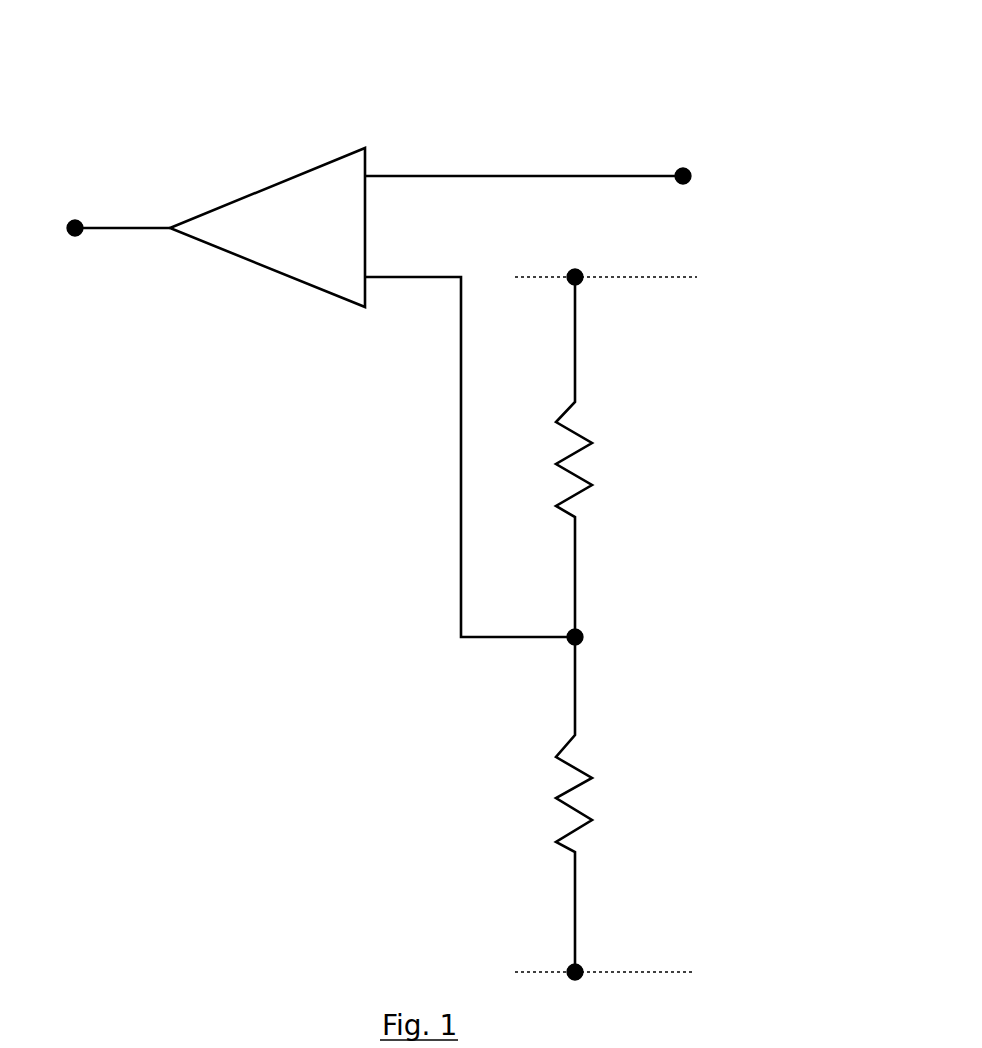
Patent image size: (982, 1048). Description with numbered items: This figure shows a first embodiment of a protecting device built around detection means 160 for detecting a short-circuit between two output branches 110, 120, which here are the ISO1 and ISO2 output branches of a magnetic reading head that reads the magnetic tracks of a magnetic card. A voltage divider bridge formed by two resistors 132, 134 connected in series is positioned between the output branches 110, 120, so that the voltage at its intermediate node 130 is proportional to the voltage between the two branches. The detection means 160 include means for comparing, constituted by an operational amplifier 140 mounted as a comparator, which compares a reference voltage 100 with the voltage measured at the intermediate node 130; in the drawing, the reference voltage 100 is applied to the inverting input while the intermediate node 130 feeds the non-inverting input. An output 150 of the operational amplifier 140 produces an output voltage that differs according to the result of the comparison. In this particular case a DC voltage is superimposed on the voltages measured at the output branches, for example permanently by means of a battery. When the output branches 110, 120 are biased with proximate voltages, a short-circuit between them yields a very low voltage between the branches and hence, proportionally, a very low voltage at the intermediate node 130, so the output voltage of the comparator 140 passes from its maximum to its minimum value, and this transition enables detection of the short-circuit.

The reference voltage 100 is at (690, 169).
The output branch 110 is at (620, 277).
The output branch 120 is at (582, 966).
The intermediate node 130 is at (583, 633).
The resistor 132 is at (572, 425).
The resistor 134 is at (578, 852).
The operational amplifier 140 is at (322, 268).
The output 150 is at (78, 218).
The detection means 160 is at (297, 137).